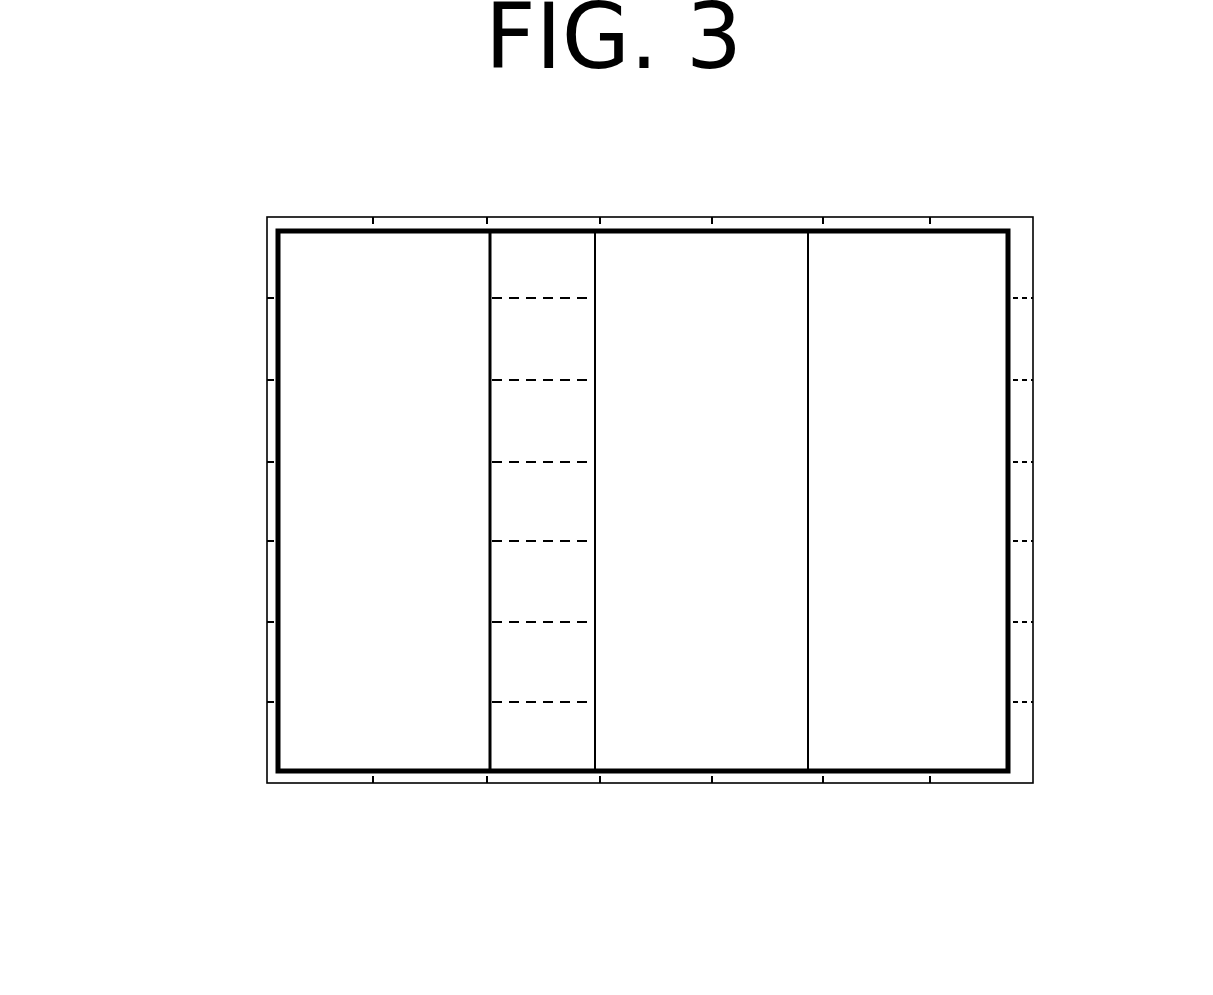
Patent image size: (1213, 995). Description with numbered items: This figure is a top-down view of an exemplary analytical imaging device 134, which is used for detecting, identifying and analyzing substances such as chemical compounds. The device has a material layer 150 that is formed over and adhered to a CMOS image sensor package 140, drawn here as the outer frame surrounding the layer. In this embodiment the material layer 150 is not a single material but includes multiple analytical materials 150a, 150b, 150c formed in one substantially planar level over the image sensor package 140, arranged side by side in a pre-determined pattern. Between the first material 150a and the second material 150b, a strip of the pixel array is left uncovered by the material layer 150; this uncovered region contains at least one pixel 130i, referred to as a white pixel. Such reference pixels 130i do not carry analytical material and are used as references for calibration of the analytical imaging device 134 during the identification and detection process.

The analytical imaging device 134 is at (947, 148).
The CMOS image sensor package 140 is at (1018, 585).
The material layer 150 is at (272, 498).
The analytical material 150a is at (427, 522).
The analytical material 150b is at (742, 524).
The analytical material 150c is at (948, 524).
The pixel 130i is at (575, 518).